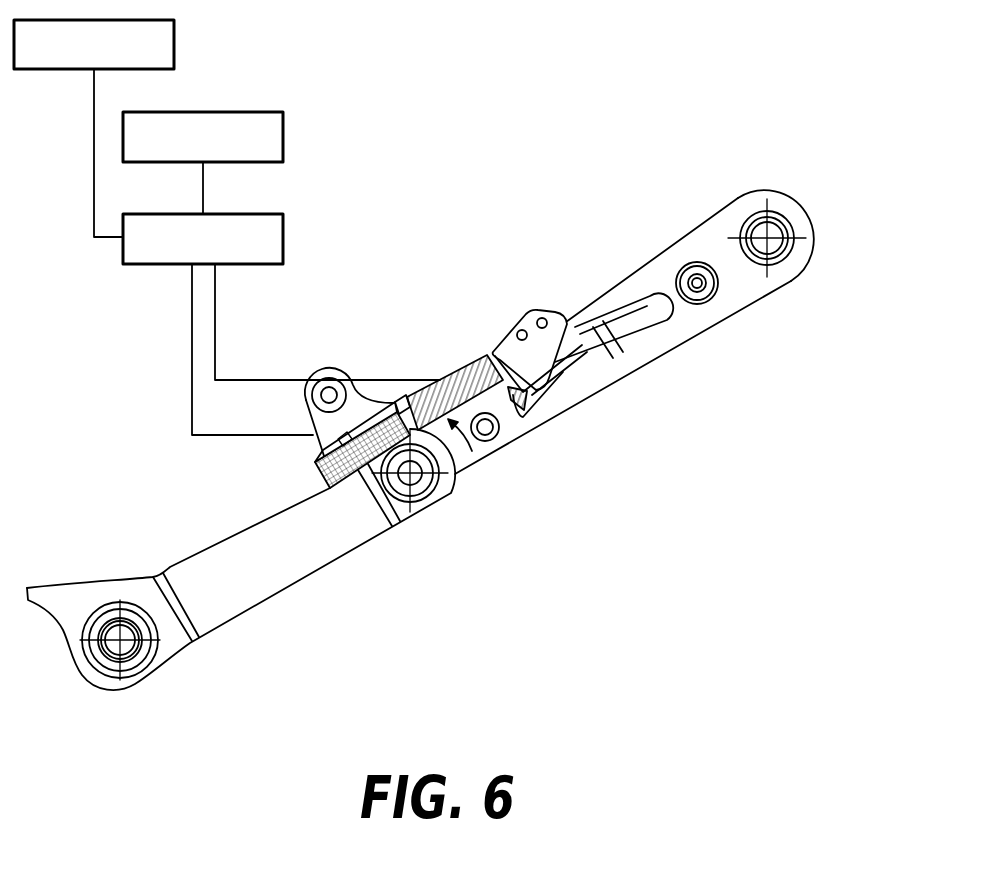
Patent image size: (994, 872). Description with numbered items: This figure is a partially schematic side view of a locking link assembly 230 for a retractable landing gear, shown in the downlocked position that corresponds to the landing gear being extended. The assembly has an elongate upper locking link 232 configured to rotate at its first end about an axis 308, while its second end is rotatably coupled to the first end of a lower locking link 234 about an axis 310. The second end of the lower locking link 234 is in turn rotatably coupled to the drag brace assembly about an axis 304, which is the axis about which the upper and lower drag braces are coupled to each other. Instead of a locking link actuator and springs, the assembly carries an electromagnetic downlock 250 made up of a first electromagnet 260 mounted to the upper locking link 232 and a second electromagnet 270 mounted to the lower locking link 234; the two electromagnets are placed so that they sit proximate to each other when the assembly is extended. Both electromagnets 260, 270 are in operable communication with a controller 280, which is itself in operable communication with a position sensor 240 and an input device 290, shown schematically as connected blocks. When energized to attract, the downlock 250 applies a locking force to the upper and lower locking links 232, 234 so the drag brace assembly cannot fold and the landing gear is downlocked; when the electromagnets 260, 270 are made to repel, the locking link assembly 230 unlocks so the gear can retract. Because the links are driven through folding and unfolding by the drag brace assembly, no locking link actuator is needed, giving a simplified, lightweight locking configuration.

The locking link assembly 230 is at (547, 527).
The upper locking link 232 is at (610, 380).
The lower locking link 234 is at (283, 580).
The position sensor 240 is at (174, 40).
The downlock 250 is at (400, 372).
The first electromagnet 260 is at (473, 364).
The second electromagnet 270 is at (320, 480).
The controller 280 is at (283, 236).
The input device 290 is at (283, 133).
The axis 304 is at (125, 652).
The axis 308 is at (773, 240).
The axis 310 is at (417, 492).